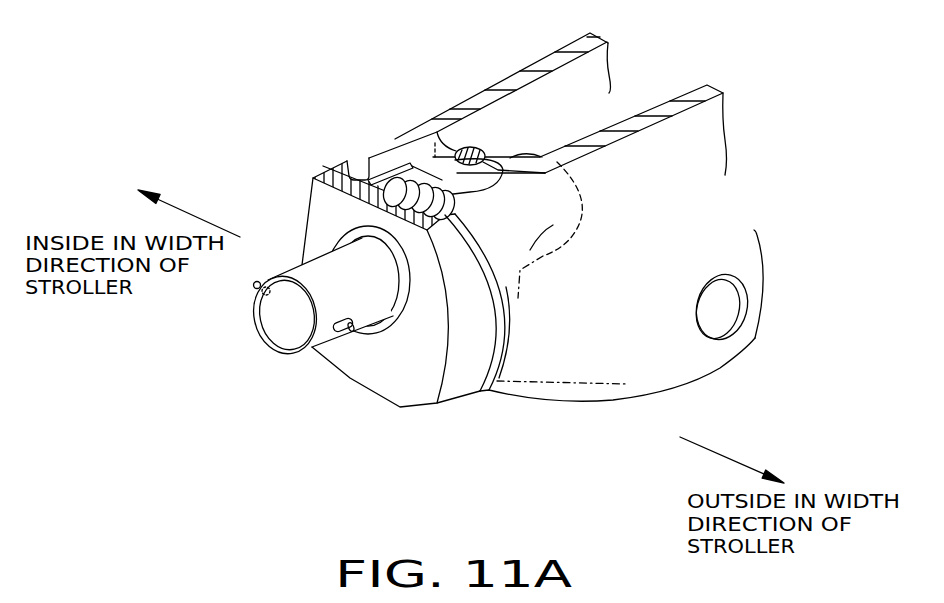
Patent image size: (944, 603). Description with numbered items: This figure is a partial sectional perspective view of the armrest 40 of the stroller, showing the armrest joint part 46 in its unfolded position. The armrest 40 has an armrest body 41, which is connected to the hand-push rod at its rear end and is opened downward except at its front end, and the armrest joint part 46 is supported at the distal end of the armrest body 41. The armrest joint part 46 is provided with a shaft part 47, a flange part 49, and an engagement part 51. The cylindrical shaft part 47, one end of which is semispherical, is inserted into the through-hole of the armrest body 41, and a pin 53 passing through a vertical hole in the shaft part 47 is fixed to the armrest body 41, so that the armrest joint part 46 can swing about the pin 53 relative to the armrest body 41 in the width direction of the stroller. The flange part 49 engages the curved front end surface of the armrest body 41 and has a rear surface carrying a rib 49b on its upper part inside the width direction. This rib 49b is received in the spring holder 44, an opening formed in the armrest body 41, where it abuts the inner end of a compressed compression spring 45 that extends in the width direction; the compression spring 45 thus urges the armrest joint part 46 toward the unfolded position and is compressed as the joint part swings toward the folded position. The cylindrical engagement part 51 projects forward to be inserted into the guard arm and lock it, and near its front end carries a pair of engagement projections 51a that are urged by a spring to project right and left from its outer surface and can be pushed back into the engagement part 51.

The armrest 40 is at (302, 100).
The armrest body 41 is at (597, 405).
The spring holder 44 is at (427, 187).
The compression spring 45 is at (390, 172).
The armrest joint part 46 is at (458, 405).
The shaft part 47 is at (523, 153).
The flange part 49 is at (316, 222).
The rib 49b is at (366, 156).
The engagement part 51 is at (278, 337).
The engagement projections 51a is at (255, 287).
The pin 53 is at (472, 147).